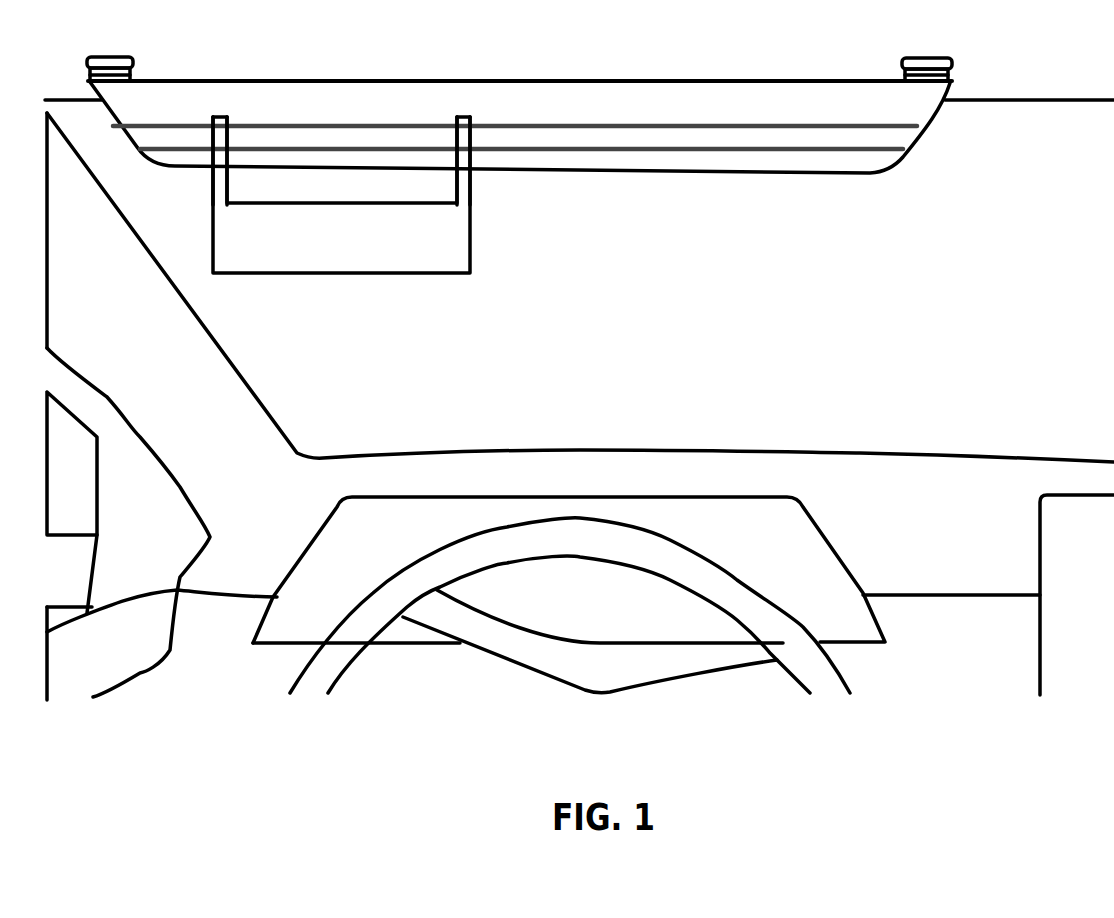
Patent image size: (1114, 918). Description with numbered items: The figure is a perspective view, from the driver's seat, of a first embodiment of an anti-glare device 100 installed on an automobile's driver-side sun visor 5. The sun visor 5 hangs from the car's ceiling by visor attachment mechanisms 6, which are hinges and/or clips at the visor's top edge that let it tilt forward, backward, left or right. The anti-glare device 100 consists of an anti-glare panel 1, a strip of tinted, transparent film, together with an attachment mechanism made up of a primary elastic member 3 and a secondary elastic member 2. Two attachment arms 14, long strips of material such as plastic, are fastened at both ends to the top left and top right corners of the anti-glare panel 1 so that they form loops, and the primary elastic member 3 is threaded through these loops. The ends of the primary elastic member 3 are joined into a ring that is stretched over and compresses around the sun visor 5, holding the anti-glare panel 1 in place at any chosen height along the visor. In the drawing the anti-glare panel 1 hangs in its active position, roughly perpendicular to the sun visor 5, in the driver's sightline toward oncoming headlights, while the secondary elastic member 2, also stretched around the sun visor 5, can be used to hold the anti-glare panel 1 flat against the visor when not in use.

The anti-glare device 100 is at (480, 290).
The anti-glare panel 1 is at (285, 258).
The secondary elastic member 2 is at (617, 152).
The primary elastic member 3 is at (707, 127).
The sun visor 5 is at (312, 87).
The visor attachment mechanisms 6 is at (110, 63).
The attachment arms 14 is at (225, 117).